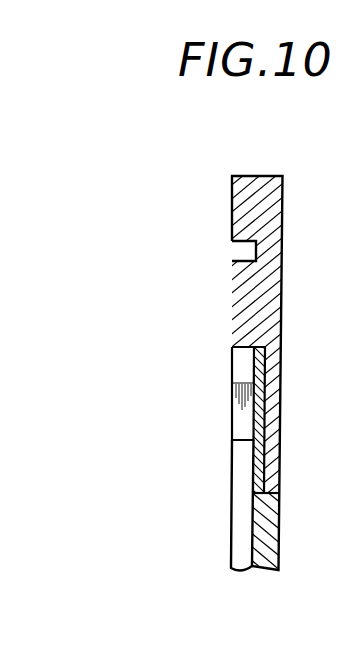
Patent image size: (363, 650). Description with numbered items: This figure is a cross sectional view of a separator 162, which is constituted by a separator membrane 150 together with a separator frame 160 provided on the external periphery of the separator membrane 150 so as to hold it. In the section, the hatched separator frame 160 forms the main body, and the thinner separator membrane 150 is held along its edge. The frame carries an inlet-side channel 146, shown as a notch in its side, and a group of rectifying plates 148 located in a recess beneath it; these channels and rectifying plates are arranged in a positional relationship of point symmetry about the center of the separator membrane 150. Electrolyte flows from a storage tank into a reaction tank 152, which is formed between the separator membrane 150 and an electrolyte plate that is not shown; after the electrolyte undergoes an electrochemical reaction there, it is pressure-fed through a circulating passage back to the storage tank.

The inlet-side channel 146 is at (240, 249).
The rectifying plates 148 is at (240, 426).
The separator membrane 150 is at (280, 531).
The reaction tank 152 is at (246, 519).
The separator frame 160 is at (282, 198).
The separator 162 is at (296, 370).